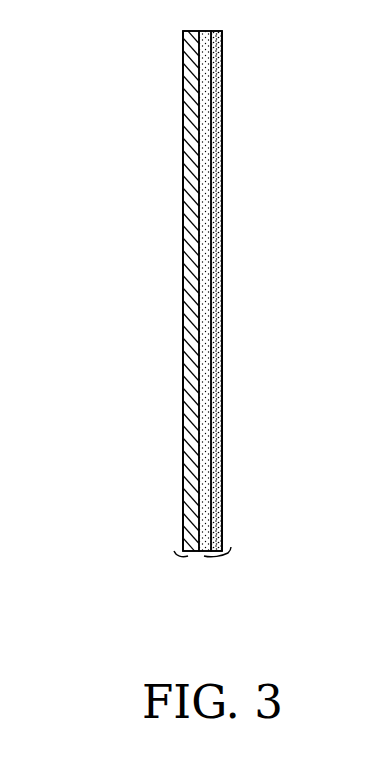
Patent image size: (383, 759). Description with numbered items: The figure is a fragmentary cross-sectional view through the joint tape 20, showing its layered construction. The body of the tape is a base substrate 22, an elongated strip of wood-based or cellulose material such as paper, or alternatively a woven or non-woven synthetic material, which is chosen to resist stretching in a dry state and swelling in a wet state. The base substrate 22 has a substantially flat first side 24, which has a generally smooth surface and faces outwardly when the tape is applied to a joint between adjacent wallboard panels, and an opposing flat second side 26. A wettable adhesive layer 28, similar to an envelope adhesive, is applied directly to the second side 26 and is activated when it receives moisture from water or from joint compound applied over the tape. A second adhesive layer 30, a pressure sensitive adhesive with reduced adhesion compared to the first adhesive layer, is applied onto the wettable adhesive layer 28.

The joint tape 20 is at (281, 172).
The base substrate 22 is at (191, 553).
The first side 24 is at (171, 283).
The second side 26 is at (233, 281).
The wettable adhesive layer 28 is at (203, 553).
The second adhesive layer 30 is at (222, 504).